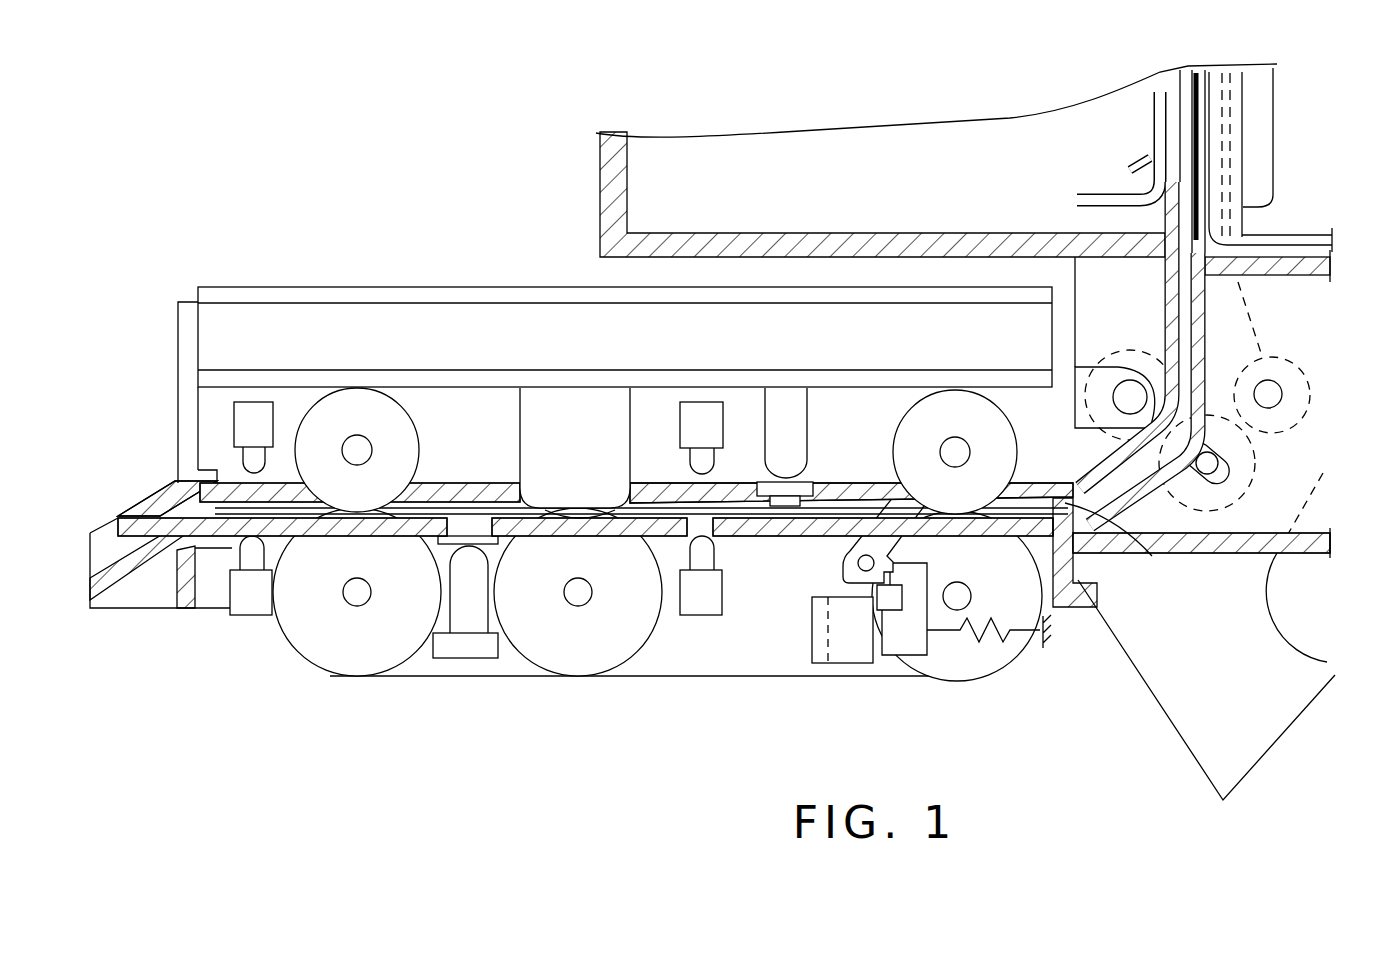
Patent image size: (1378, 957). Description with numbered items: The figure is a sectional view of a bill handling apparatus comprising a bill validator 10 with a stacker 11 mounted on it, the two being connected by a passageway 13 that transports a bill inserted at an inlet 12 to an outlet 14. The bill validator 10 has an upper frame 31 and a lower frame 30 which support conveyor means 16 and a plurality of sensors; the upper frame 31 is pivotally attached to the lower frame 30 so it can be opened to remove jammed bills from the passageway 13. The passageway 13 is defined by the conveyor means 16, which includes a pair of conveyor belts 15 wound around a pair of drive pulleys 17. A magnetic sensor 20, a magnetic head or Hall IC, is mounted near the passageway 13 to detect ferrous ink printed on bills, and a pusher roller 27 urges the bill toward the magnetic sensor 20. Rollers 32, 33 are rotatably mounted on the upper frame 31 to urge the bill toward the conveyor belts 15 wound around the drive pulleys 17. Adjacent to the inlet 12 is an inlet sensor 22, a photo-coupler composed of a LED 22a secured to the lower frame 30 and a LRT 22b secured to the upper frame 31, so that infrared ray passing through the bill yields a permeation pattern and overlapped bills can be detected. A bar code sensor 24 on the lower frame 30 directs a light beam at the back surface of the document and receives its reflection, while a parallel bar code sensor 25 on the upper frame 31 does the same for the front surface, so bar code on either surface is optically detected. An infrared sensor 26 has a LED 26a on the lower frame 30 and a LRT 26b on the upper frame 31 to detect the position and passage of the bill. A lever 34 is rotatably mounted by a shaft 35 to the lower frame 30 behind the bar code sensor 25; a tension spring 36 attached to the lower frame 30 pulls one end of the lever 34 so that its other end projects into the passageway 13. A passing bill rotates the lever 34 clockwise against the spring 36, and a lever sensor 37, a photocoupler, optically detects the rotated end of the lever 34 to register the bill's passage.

The bill validator 10 is at (328, 254).
The stacker 11 is at (1048, 128).
The inlet 12 is at (115, 538).
The passageway 13 is at (458, 503).
The outlet 14 is at (1148, 550).
The conveyor belts 15 is at (652, 678).
The conveyor means 16 is at (541, 688).
The drive pulleys 17 is at (340, 648).
The magnetic sensor 20 is at (547, 412).
The inlet sensor 22 is at (206, 433).
The LED 22a is at (252, 606).
The LRT 22b is at (257, 413).
The bar code sensor 24 is at (468, 623).
The bar code sensor 25 is at (788, 422).
The infrared sensor 26 is at (735, 402).
The LED 26a is at (703, 617).
The LRT 26b is at (697, 413).
The pusher roller 27 is at (577, 662).
The lower frame 30 is at (152, 608).
The upper frame 31 is at (183, 300).
The roller 32 is at (358, 425).
The roller 33 is at (952, 408).
The lever 34 is at (895, 645).
The shaft 35 is at (843, 562).
The tension spring 36 is at (982, 642).
The lever sensor 37 is at (853, 655).